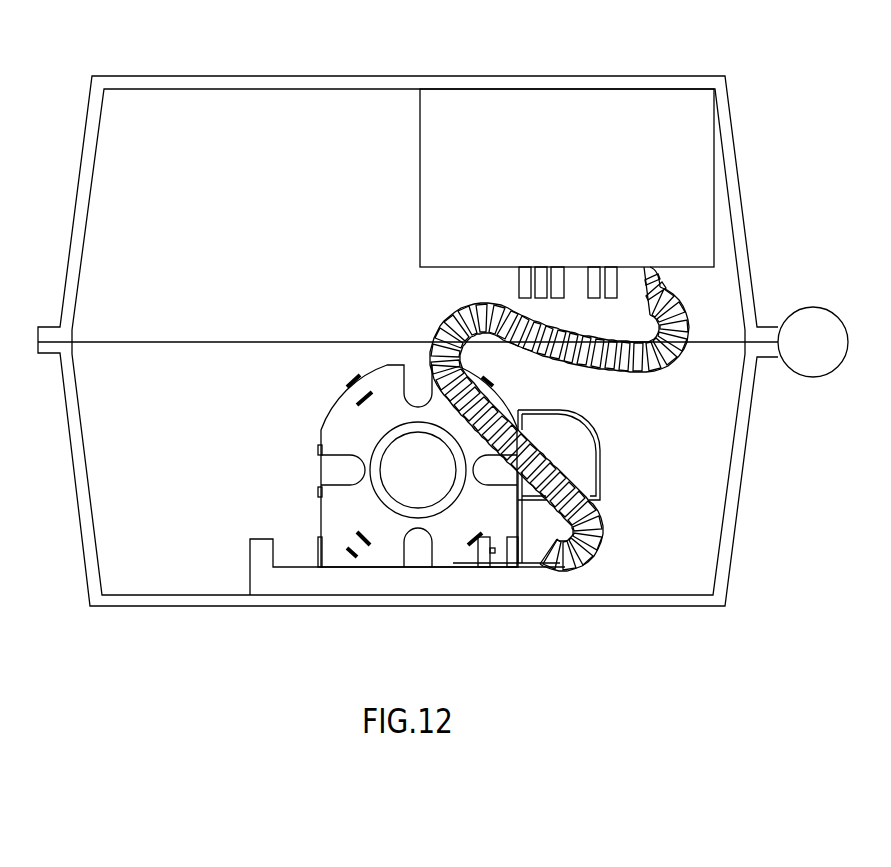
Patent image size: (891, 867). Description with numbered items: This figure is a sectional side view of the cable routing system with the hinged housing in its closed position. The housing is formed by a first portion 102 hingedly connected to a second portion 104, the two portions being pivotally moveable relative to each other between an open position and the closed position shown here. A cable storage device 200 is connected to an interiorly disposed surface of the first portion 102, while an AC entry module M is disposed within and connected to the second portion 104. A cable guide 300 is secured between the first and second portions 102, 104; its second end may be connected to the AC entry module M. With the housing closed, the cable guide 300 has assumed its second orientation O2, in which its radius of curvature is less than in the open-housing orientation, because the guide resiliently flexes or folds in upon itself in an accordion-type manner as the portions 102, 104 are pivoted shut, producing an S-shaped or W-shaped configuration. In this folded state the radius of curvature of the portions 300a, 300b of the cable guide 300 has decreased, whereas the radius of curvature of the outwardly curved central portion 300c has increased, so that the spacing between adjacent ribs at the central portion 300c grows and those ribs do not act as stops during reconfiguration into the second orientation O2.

The first portion 102 is at (756, 492).
The second portion 104 is at (755, 187).
The AC entry module M is at (587, 115).
The cable storage device 200 is at (315, 402).
The cable guide 300 is at (579, 419).
The portion of the cable guide 300a is at (612, 544).
The portion of the cable guide 300b is at (705, 316).
The central portion 300c is at (415, 319).
The second orientation O2 is at (425, 303).